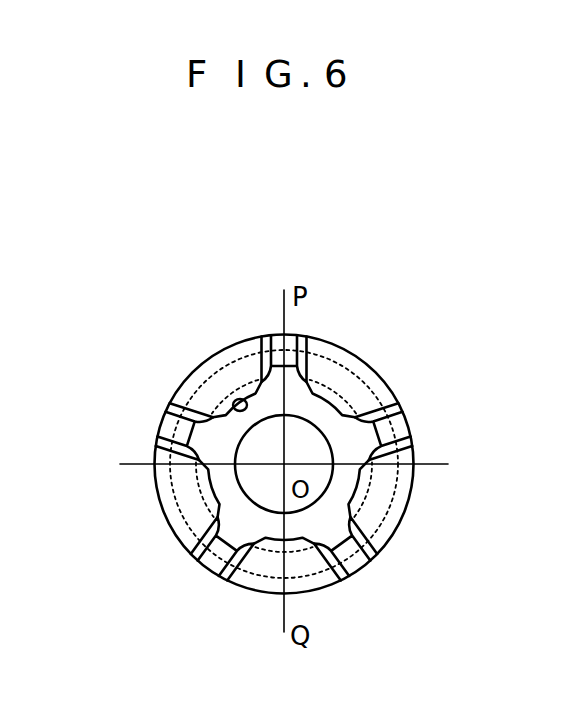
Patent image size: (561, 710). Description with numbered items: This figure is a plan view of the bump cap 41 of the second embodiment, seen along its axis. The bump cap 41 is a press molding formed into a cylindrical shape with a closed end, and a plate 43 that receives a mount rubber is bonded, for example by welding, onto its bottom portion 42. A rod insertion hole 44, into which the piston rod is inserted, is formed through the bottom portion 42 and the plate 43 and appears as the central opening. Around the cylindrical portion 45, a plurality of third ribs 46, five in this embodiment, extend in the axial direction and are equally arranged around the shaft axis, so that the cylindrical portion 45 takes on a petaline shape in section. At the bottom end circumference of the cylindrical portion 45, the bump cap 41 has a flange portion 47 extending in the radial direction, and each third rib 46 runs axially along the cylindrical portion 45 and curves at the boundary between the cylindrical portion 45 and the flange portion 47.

The bump cap 41 is at (338, 286).
The bottom portion 42 is at (318, 412).
The plate 43 is at (217, 352).
The rod insertion hole 44 is at (248, 483).
The cylindrical portion 45 is at (228, 402).
The third ribs 46 is at (170, 430).
The flange portion 47 is at (378, 381).